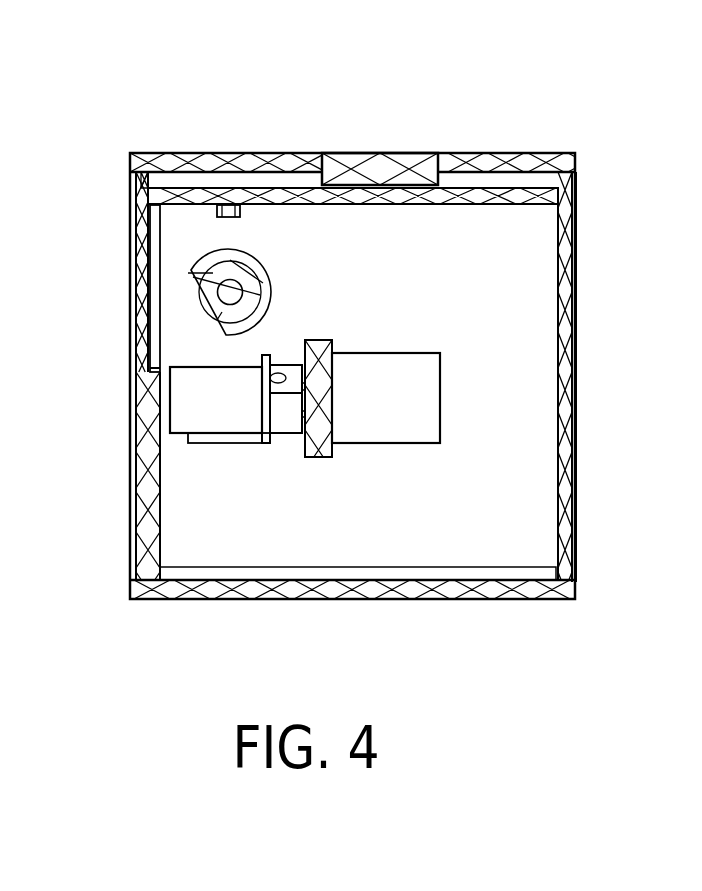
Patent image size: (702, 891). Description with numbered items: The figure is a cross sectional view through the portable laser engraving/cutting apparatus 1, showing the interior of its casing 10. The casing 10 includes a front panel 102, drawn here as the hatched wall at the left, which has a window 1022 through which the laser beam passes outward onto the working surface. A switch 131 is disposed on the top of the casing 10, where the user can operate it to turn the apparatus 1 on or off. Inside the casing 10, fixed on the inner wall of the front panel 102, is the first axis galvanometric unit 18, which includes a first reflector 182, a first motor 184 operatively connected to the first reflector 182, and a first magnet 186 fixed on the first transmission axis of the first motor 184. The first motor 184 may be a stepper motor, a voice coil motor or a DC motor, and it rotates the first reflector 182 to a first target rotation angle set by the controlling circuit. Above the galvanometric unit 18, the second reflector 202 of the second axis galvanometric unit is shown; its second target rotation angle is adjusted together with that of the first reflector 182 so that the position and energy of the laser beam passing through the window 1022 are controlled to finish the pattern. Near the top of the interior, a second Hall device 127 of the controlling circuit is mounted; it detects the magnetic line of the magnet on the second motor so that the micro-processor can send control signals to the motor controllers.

The portable laser engraving/cutting apparatus 1 is at (323, 78).
The casing 10 is at (479, 590).
The front panel 102 is at (148, 441).
The window 1022 is at (157, 331).
The second Hall device 127 is at (226, 210).
The switch 131 is at (393, 165).
The first axis galvanometric unit 18 is at (390, 650).
The first reflector 182 is at (210, 402).
The first motor 184 is at (372, 410).
The first magnet 186 is at (283, 405).
The second reflector 202 is at (190, 276).